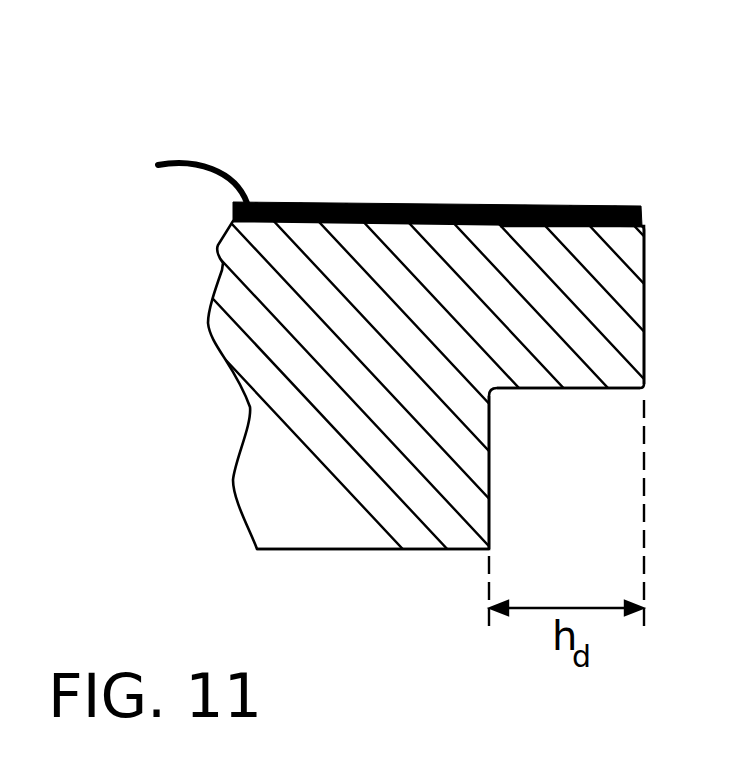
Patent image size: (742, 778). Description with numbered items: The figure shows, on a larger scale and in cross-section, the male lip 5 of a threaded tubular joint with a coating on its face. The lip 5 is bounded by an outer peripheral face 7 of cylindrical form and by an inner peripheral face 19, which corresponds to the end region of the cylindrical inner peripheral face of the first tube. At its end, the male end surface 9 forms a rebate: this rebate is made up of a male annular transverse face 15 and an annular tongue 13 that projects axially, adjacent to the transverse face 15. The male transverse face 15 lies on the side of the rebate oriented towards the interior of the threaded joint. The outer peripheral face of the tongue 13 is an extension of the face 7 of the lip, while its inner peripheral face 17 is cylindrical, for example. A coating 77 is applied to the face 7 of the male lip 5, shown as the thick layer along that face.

The lip 5 is at (296, 270).
The outer peripheral face 7 is at (401, 203).
The annular tongue 13 is at (545, 300).
The male annular transverse face 15 is at (492, 479).
The inner peripheral face of the tongue 17 is at (547, 390).
The inner peripheral face 19 is at (393, 551).
The coating 77 is at (164, 164).
The male end surface 9 is at (652, 407).